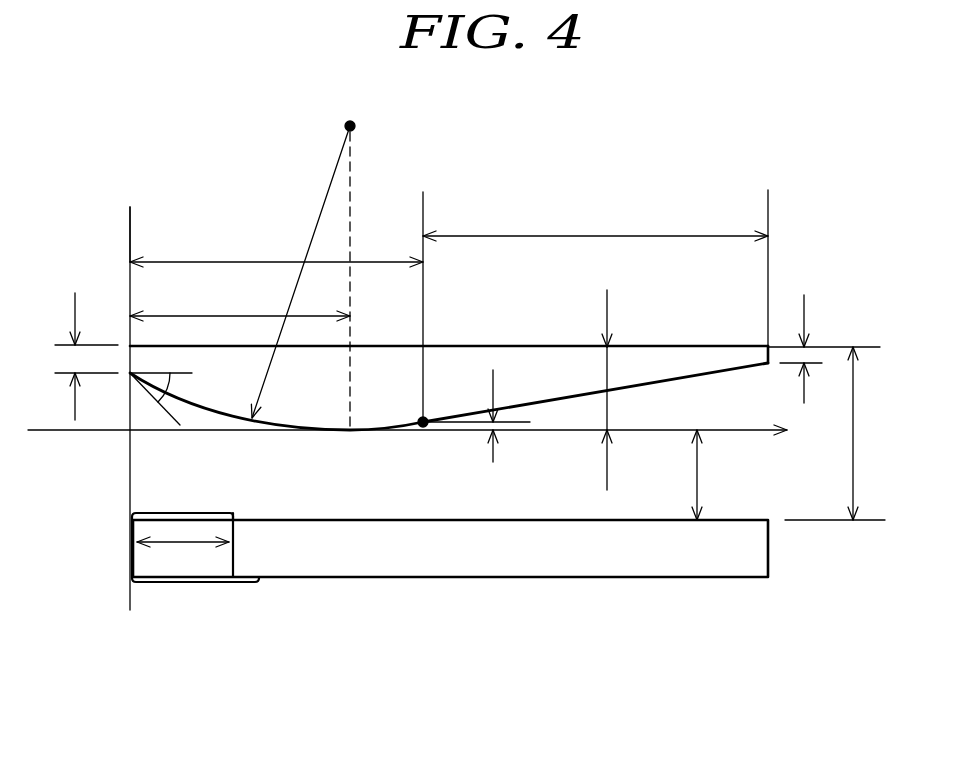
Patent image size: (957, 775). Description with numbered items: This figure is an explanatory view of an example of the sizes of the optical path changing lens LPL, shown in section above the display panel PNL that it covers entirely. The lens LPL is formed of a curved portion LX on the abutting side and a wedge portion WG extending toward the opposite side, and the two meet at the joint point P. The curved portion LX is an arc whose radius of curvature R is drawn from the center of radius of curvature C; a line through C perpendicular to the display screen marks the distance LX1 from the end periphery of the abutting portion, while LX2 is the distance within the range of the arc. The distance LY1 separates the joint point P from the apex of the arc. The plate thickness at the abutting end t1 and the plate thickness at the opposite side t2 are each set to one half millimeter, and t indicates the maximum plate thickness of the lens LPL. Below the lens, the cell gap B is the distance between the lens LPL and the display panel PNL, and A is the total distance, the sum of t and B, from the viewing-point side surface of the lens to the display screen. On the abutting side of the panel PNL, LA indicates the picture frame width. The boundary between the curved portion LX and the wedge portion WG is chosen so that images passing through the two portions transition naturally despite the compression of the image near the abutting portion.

The optical path changing lens LPL is at (468, 357).
The display panel PNL is at (592, 588).
The center of radius of curvature C is at (350, 111).
The joint point P is at (420, 429).
The radius of curved portion R is at (301, 272).
The curved portion LX is at (197, 218).
The distance from abutting end to perpendicular through center of curvature LX1 is at (240, 303).
The distance within range of arc LX2 is at (276, 249).
The wedge portion WG is at (595, 205).
The abutting-end-portion plate thickness t1 is at (74, 343).
The plate thickness of opposite side t2 is at (824, 332).
The maximum plate thickness t is at (599, 390).
The distance between joint point and arc apex LY1 is at (485, 421).
The total distance A is at (835, 433).
The cell gap B is at (684, 475).
The picture frame width on abutting side LA is at (195, 547).